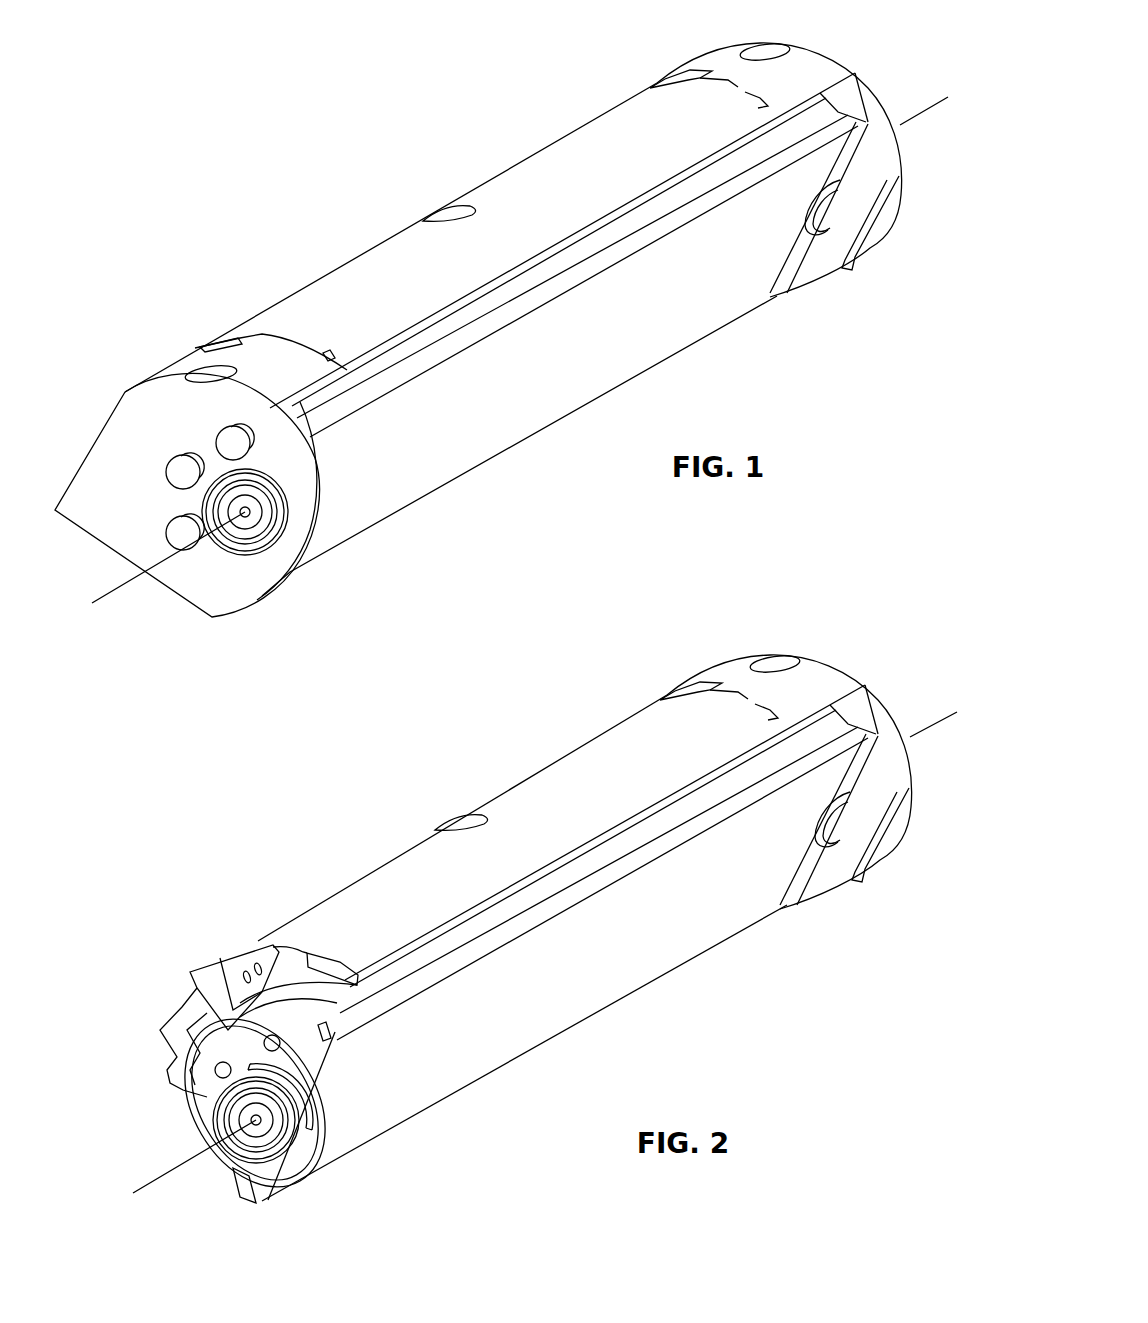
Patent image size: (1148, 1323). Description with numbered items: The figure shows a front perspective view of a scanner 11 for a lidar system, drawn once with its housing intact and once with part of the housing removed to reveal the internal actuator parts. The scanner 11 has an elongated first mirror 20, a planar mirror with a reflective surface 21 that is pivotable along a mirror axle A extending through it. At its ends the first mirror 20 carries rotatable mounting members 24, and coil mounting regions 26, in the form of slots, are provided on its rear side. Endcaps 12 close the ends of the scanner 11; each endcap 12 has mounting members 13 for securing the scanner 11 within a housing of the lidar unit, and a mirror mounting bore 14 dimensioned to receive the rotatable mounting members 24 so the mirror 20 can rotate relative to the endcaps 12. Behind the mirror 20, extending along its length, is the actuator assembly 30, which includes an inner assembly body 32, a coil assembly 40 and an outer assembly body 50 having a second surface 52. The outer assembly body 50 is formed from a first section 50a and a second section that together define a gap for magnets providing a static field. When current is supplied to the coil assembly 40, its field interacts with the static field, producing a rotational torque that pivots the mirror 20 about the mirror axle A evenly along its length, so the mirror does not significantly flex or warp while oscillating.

In FIG. 1, the scanner 11 is at (205, 632).
In FIG. 2, the scanner 11 is at (203, 1202).
In FIG. 1, the endcap 12 is at (157, 377).
In FIG. 2, the endcap 12 is at (833, 680).
In FIG. 1, the mounting member 13 is at (168, 468).
In FIG. 1, the mirror mounting bore 14 is at (251, 578).
In FIG. 1, the first mirror 20 is at (390, 522).
In FIG. 2, the first mirror 20 is at (523, 1062).
In FIG. 1, the reflective surface 21 is at (472, 449).
In FIG. 2, the reflective surface 21 is at (608, 990).
In FIG. 1, the rotatable mounting member 24 is at (268, 542).
In FIG. 2, the rotatable mounting member 24 is at (300, 1131).
In FIG. 2, the coil mounting region 26 is at (250, 1188).
In FIG. 1, the actuator assembly 30 is at (272, 290).
In FIG. 2, the actuator assembly 30 is at (160, 1010).
In FIG. 2, the inner assembly body 32 is at (213, 1098).
In FIG. 2, the coil assembly 40 is at (193, 1082).
In FIG. 1, the outer assembly body 50 is at (357, 284).
In FIG. 2, the outer assembly body 50 is at (335, 890).
In FIG. 1, the first section 50a is at (500, 205).
In FIG. 2, the first section 50a is at (562, 782).
In FIG. 1, the second surface 52 is at (553, 165).
In FIG. 2, the second surface 52 is at (614, 748).
In FIG. 1, the mirror axle A is at (121, 592).
In FIG. 2, the mirror axle A is at (143, 1188).